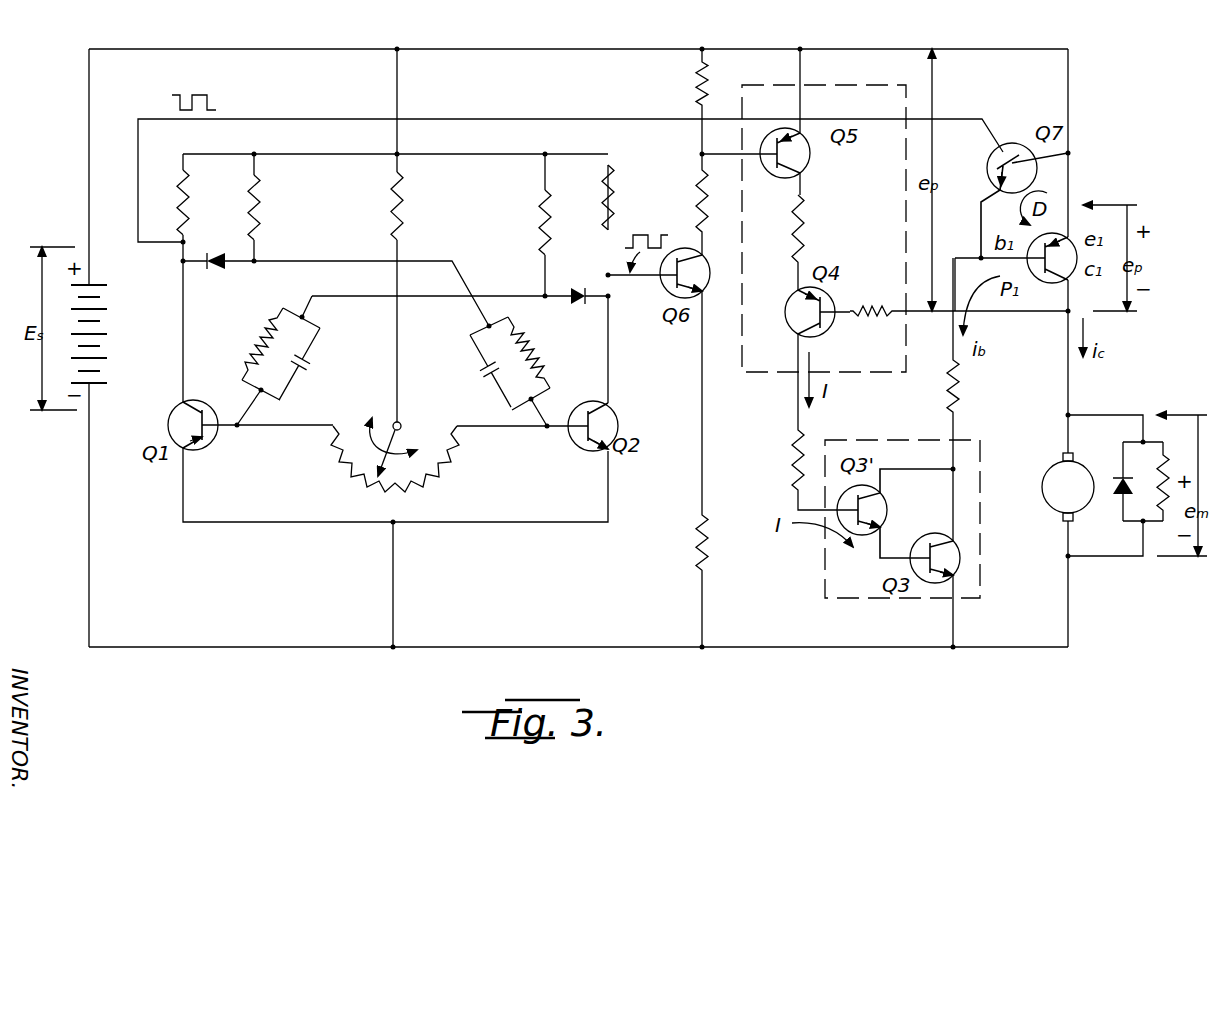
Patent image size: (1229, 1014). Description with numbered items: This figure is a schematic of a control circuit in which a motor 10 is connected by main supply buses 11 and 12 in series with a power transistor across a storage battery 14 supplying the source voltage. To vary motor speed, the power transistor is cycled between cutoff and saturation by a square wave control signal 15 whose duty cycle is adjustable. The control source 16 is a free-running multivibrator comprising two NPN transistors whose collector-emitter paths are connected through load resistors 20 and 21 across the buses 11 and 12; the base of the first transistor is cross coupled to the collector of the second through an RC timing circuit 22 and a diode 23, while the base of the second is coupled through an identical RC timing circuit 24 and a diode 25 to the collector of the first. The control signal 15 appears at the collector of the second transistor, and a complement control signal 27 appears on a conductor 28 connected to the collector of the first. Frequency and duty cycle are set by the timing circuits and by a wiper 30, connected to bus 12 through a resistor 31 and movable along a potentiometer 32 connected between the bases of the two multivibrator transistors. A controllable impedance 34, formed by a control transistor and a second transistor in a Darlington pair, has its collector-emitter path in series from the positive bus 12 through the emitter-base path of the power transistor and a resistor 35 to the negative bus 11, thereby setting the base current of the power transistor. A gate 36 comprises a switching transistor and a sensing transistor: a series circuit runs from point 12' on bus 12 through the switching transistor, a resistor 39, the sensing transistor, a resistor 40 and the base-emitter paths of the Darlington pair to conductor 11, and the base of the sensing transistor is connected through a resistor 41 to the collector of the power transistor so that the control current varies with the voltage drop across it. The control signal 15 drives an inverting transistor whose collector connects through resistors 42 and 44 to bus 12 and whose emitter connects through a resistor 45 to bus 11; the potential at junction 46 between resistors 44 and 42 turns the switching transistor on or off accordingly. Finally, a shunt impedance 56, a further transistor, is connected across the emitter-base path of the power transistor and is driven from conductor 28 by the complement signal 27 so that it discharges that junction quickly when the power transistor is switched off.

The motor 10 is at (1047, 506).
The main supply bus 11 is at (246, 650).
The main supply bus 12 is at (578, 34).
The point on the bus 12' is at (833, 106).
The storage battery 14 is at (108, 304).
The control signal 15 is at (638, 232).
The adjustable duty cycle control source 16 is at (232, 533).
The load resistor 20 is at (184, 196).
The load resistor 21 is at (603, 202).
The RC timing circuit 22 is at (300, 350).
The diode 23 is at (579, 302).
The RC timing circuit 24 is at (482, 353).
The diode 25 is at (212, 270).
The complement control signal 27 is at (200, 97).
The conductor 28 is at (138, 184).
The wiper 30 is at (380, 433).
The resistor 31 is at (404, 214).
The potentiometer 32 is at (446, 474).
The controllable impedance 34 is at (823, 601).
The resistor 35 is at (962, 399).
The gate 36 is at (770, 373).
The resistor 39 is at (808, 217).
The resistor 40 is at (792, 412).
The resistor 41 is at (889, 307).
The resistor 42 is at (698, 186).
The resistor 44 is at (697, 96).
The resistor 45 is at (695, 556).
The junction 46 is at (698, 154).
The shunt impedance 56 is at (1010, 112).